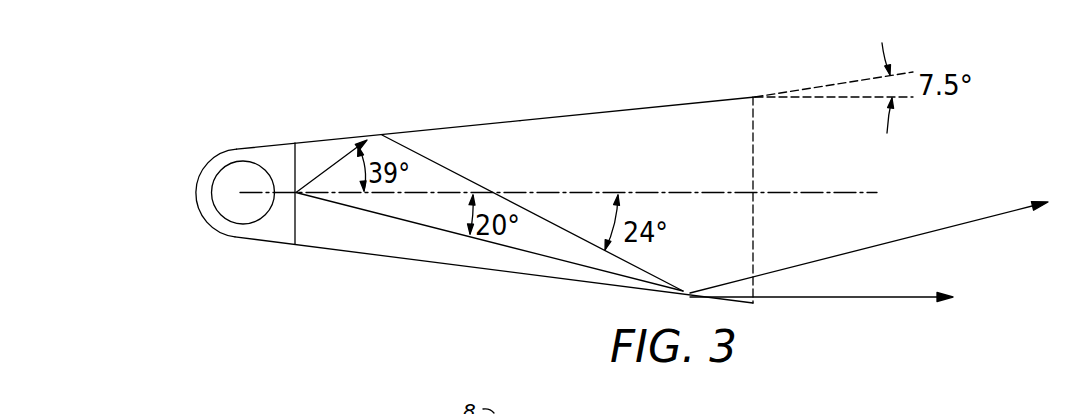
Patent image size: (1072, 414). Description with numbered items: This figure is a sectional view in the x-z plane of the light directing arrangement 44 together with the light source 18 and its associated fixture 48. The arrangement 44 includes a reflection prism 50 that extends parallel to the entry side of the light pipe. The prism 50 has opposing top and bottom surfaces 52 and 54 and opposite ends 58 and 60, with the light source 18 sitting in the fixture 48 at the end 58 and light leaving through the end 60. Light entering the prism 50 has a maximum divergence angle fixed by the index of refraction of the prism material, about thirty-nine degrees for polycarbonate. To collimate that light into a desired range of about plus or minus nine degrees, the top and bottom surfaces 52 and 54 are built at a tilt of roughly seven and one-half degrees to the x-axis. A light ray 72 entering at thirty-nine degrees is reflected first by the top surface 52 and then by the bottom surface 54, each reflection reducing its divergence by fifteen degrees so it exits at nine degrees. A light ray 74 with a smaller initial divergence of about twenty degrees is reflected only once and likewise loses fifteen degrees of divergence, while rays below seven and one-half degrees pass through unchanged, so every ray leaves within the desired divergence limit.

The arrangement 44 is at (280, 69).
The fixture 48 is at (208, 223).
The light source 18 is at (248, 213).
The reflection prism 50 is at (508, 132).
The top surface 52 is at (613, 110).
The bottom surface 54 is at (528, 275).
The end 58 is at (292, 155).
The light ray 72 is at (337, 163).
The light ray 74 is at (400, 218).
The end 60 is at (755, 150).